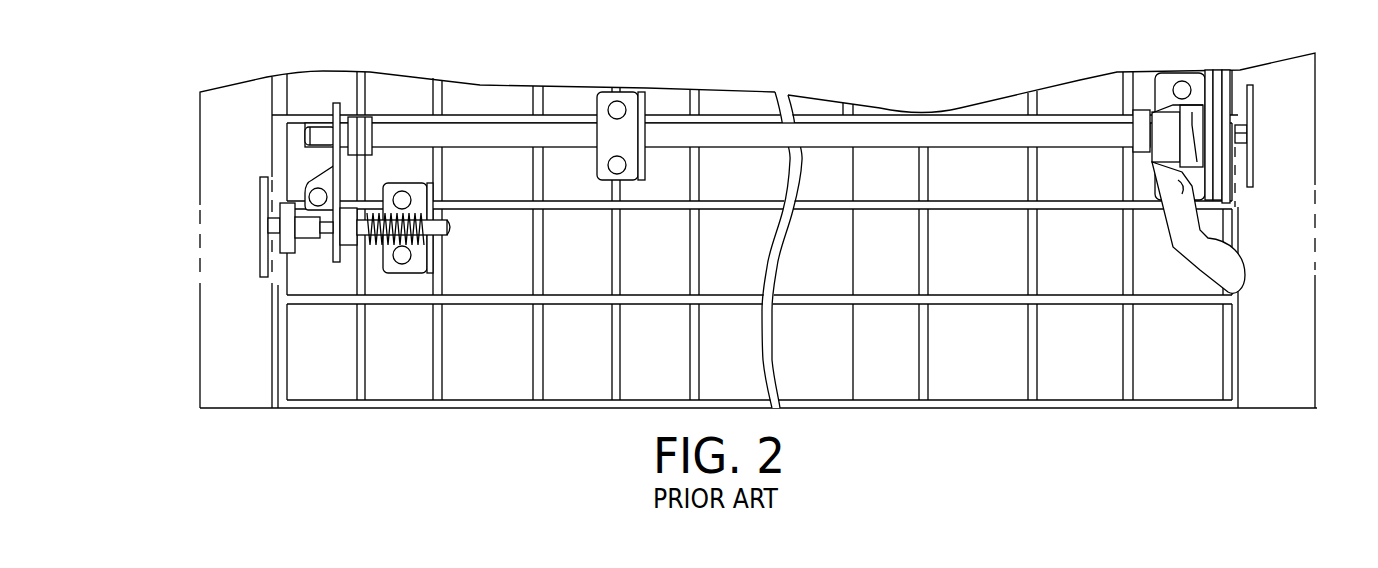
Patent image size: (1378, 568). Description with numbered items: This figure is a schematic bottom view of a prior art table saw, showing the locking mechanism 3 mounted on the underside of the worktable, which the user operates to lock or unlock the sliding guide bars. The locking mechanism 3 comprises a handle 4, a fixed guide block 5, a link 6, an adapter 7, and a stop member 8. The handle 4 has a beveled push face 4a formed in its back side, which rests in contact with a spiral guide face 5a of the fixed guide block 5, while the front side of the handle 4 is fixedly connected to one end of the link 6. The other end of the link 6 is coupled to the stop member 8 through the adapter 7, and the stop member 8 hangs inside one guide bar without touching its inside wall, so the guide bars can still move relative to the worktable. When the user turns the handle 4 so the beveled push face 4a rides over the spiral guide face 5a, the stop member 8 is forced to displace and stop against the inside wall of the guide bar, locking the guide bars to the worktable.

The locking mechanism 3 is at (1086, 106).
The handle 4 is at (1233, 273).
The beveled push face 4a is at (1140, 83).
The spiral guide face 5a is at (1192, 137).
The fixed guide block 5 is at (1198, 127).
The link 6 is at (670, 138).
The adapter 7 is at (337, 167).
The stop member 8 is at (262, 210).